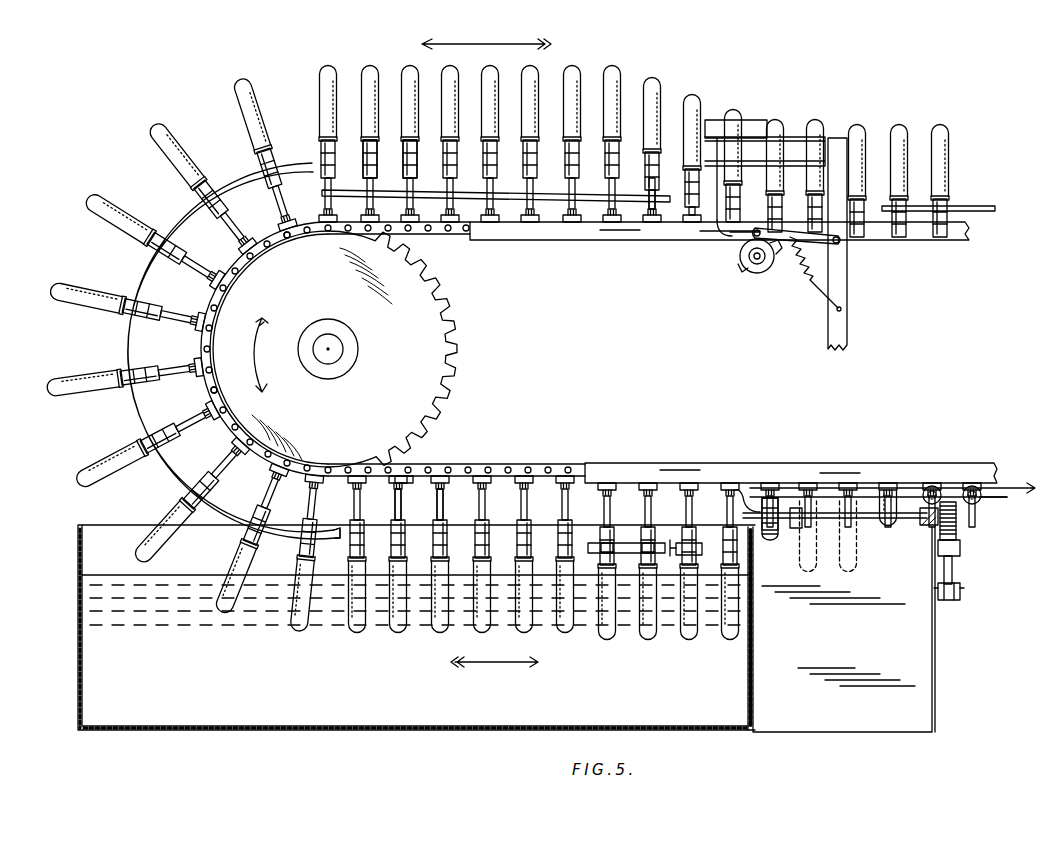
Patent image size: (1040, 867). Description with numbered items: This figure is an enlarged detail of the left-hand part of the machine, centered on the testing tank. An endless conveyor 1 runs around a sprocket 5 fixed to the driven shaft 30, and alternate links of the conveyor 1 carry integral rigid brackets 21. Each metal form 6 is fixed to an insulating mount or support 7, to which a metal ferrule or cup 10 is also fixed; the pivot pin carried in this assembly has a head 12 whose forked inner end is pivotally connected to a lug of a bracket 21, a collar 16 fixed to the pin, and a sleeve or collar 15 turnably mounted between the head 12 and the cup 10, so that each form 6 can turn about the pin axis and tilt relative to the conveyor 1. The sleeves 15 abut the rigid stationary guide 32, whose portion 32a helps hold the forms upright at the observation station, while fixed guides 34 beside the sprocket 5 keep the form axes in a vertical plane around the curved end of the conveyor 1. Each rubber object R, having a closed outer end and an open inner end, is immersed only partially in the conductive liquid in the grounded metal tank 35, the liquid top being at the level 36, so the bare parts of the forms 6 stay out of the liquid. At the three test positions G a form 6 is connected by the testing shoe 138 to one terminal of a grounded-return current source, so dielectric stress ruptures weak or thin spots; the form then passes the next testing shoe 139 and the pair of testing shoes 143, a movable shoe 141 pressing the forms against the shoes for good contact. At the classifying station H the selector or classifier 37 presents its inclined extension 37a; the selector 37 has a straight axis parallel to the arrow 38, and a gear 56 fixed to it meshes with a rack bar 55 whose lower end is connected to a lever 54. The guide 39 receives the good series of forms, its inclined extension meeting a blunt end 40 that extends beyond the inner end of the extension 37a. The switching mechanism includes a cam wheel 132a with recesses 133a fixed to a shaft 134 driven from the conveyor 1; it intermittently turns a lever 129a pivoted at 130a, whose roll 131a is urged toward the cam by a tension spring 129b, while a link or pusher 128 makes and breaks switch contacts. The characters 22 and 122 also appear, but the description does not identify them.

The rubber object R is at (366, 80).
The endless conveyor 1 is at (433, 246).
The sprocket 5 is at (440, 370).
The metal form 6 is at (258, 182).
The mount or support 7 is at (168, 280).
The metal ferrule or cup 10 is at (312, 512).
The head 12 is at (270, 232).
The sleeve or collar 15 is at (188, 285).
The collar 16 is at (520, 504).
The rigid bracket 21 is at (288, 231).
The track 22 is at (622, 240).
The driven shaft 30 is at (332, 349).
The fixed guide 32 is at (972, 210).
The guide portion 32a is at (556, 200).
The fixed guide 34 is at (310, 165).
The grounded metal tank 35 is at (760, 674).
The liquid level 36 is at (80, 572).
The selector or classifier 37 is at (880, 520).
The inclined extension 37a is at (742, 500).
The longitudinal arrow 38 is at (1008, 486).
The guide 39 is at (992, 499).
The blunt end 40 is at (766, 485).
The lever 54 is at (948, 600).
The rack bar 55 is at (952, 562).
The gear 56 is at (958, 535).
The block 122 is at (765, 118).
The link or pusher 128 is at (715, 222).
The lever 129a is at (725, 238).
The tension spring 129b is at (818, 272).
The pivot 130a is at (842, 241).
The roll 131a is at (744, 237).
The cam wheel 132a is at (757, 274).
The recess 133a is at (770, 272).
The shaft 134 is at (753, 258).
The testing shoe 138 is at (612, 543).
The testing shoe 139 is at (654, 543).
The movable shoe 141 is at (596, 543).
The testing shoes 143 is at (700, 543).